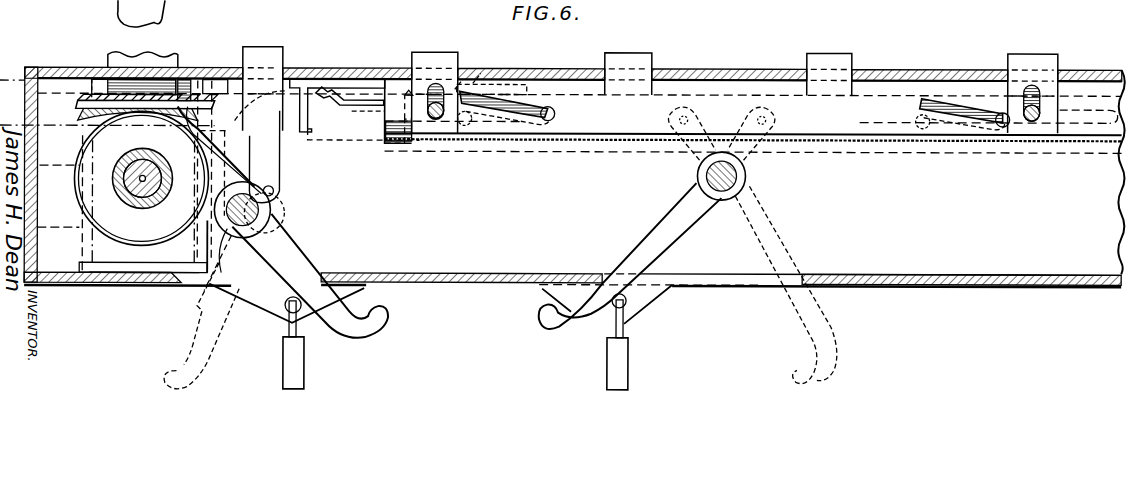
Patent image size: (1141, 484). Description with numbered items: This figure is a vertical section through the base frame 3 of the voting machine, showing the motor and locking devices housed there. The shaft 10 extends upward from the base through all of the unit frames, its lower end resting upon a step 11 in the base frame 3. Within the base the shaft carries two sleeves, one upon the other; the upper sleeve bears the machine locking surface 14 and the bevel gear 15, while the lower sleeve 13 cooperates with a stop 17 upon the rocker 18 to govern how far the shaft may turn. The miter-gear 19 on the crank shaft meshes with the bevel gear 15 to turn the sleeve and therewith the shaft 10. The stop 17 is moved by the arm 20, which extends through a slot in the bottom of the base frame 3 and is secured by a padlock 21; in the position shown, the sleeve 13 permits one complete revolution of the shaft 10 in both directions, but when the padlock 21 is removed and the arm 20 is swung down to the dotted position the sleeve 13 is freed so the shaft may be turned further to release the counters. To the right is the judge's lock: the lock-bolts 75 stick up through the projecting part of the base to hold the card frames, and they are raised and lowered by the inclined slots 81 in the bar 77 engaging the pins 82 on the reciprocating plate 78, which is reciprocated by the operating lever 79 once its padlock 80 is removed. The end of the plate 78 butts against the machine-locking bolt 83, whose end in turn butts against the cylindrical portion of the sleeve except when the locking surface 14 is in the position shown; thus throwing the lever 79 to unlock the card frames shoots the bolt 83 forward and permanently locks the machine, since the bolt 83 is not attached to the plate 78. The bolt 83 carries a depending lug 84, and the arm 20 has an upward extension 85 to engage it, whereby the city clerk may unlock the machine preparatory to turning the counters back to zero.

The base frame 3 is at (455, 292).
The shaft 10 is at (138, 62).
The step 11 is at (113, 262).
The sleeve 13 is at (82, 246).
The machine locking surface 14 is at (157, 88).
The bevel gear 15 is at (82, 112).
The stop 17 is at (220, 260).
The rocker 18 is at (272, 212).
The miter-gear 19 is at (141, 178).
The arm 20 is at (282, 252).
The padlock 21 is at (300, 355).
The lock-bolts 75 is at (270, 60).
The bar 77 is at (695, 153).
The reciprocating plate 78 is at (392, 145).
The operating lever 79 is at (672, 238).
The padlock 80 is at (628, 354).
The inclined slots 81 is at (508, 108).
The pins 82 is at (548, 118).
The machine-locking bolt 83 is at (315, 82).
The depending lug 84 is at (306, 112).
The upward extension 85 is at (230, 153).